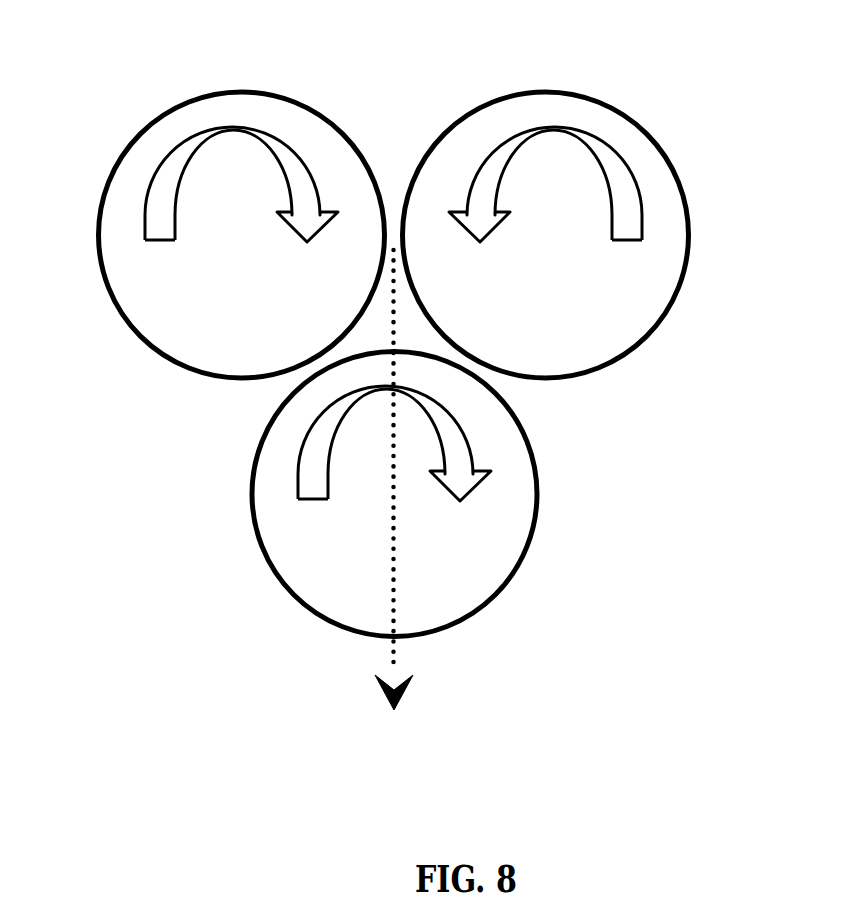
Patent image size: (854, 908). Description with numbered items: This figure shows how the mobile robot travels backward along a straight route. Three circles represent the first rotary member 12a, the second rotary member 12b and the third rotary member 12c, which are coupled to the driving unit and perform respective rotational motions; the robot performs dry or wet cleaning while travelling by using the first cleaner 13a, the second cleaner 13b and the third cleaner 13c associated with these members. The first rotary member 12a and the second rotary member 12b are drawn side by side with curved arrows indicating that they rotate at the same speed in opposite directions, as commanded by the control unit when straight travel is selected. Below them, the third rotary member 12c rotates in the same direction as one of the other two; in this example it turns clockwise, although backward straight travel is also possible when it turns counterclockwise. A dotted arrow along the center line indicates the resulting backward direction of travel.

The first rotary member 12a is at (173, 103).
The first cleaner 13a is at (233, 128).
The second rotary member 12b is at (615, 105).
The second cleaner 13b is at (593, 127).
The third rotary member 12c is at (538, 482).
The third cleaner 13c is at (515, 443).